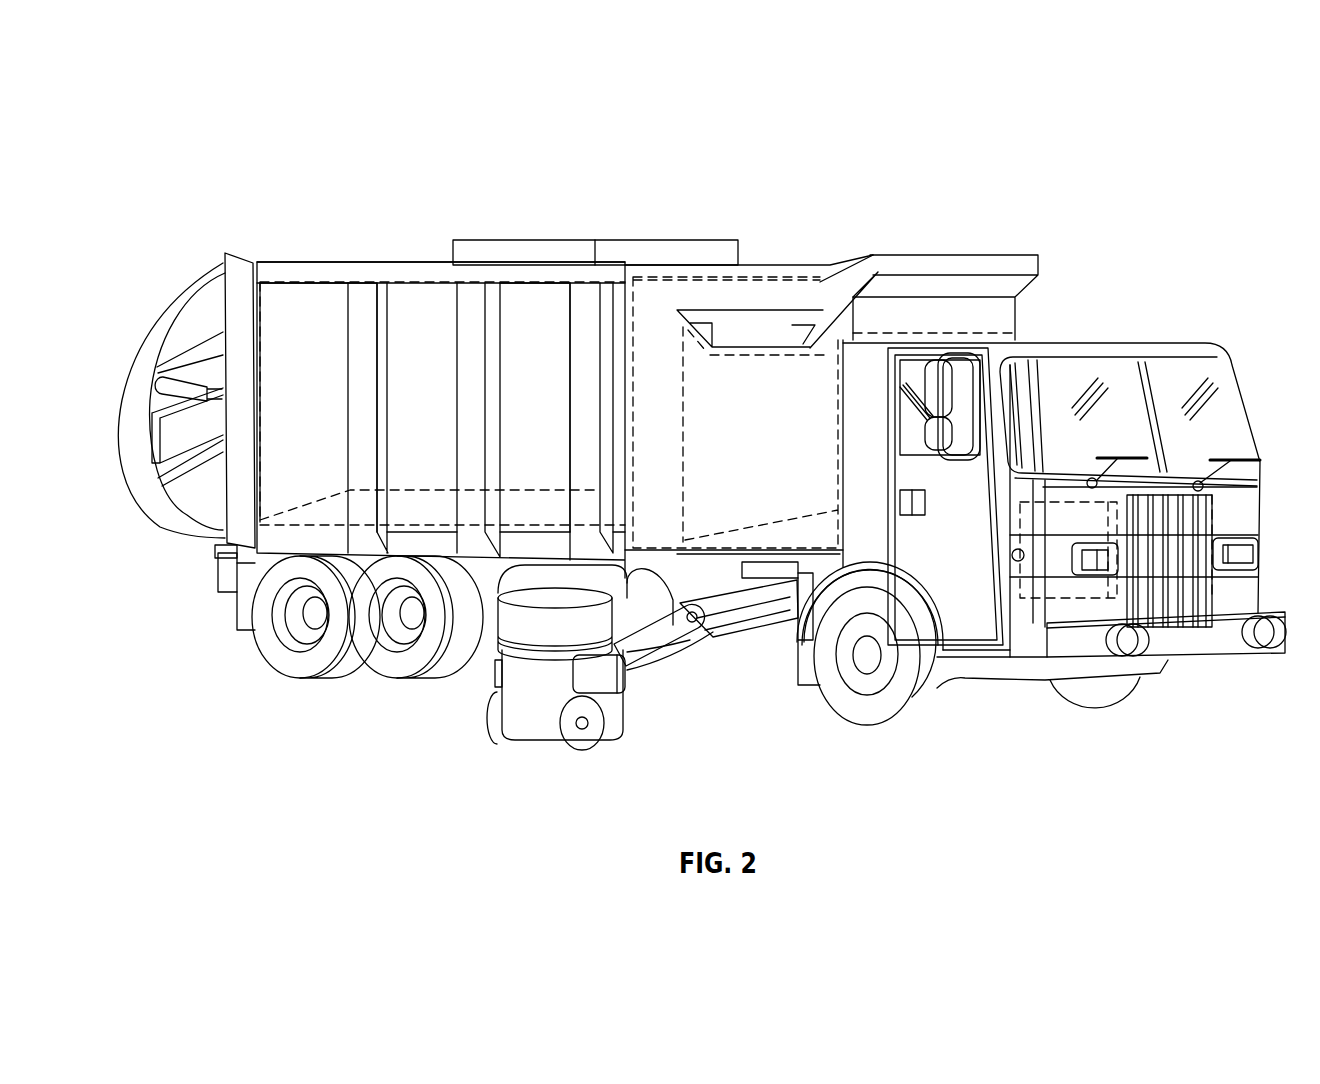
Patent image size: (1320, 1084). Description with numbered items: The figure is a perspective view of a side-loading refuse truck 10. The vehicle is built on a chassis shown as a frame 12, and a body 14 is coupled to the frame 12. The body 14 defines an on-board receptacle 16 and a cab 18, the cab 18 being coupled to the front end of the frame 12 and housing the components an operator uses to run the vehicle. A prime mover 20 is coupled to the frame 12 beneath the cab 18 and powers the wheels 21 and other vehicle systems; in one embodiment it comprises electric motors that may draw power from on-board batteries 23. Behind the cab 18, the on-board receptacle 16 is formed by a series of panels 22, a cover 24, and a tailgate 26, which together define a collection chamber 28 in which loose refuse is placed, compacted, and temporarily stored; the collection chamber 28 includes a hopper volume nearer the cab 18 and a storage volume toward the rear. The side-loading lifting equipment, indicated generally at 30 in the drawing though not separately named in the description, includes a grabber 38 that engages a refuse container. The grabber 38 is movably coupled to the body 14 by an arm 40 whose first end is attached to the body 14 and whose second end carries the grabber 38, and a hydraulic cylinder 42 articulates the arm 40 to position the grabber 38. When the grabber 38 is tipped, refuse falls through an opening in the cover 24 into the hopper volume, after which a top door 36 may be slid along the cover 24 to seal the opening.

The refuse truck 10 is at (978, 148).
The frame 12 is at (962, 677).
The body 14 is at (514, 186).
The on-board receptacle 16 is at (355, 270).
The cab 18 is at (1135, 350).
The prime mover 20 is at (1090, 566).
The wheels 21 is at (907, 700).
The panels 22 is at (317, 307).
The batteries 23 is at (1173, 560).
The cover 24 is at (403, 262).
The tailgate 26 is at (181, 292).
The collection chamber 28 is at (537, 314).
The lift arm assembly 30 is at (668, 687).
The top door 36 is at (707, 243).
The grabber 38 is at (623, 697).
The arm 40 is at (715, 613).
The hydraulic cylinder 42 is at (758, 617).